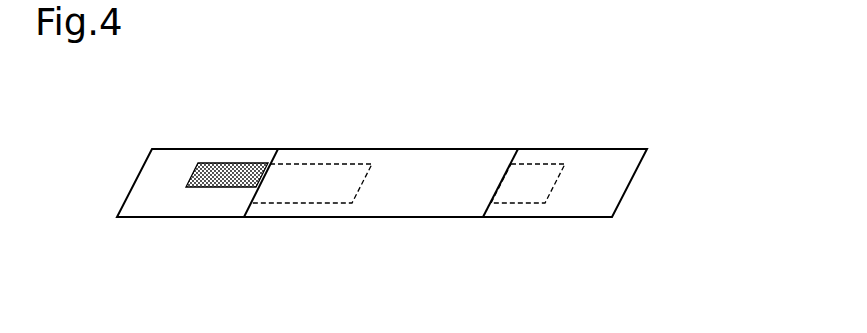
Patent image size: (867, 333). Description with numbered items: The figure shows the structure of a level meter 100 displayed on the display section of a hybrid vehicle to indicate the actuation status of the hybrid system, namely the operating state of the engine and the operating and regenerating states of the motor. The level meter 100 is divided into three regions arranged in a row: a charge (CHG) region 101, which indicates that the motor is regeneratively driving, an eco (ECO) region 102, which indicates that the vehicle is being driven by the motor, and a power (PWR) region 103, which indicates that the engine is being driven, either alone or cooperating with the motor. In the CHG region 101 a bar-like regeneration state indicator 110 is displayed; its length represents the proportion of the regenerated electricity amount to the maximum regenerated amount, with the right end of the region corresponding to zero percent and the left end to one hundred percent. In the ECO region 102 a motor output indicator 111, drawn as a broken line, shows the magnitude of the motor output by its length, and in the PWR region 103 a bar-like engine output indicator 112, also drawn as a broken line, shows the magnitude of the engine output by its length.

The level meter 100 is at (142, 128).
The charge (CHG) region 101 is at (243, 222).
The eco (ECO) region 102 is at (478, 222).
The power (PWR) region 103 is at (610, 222).
The regeneration state indicator 110 is at (190, 181).
The motor output indicator 111 is at (313, 163).
The engine output indicator 112 is at (528, 163).